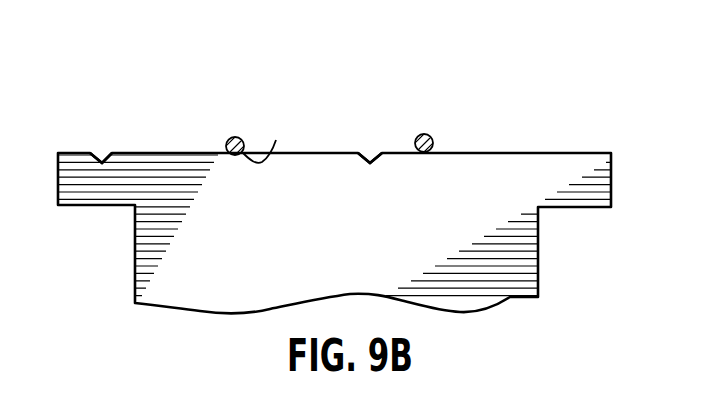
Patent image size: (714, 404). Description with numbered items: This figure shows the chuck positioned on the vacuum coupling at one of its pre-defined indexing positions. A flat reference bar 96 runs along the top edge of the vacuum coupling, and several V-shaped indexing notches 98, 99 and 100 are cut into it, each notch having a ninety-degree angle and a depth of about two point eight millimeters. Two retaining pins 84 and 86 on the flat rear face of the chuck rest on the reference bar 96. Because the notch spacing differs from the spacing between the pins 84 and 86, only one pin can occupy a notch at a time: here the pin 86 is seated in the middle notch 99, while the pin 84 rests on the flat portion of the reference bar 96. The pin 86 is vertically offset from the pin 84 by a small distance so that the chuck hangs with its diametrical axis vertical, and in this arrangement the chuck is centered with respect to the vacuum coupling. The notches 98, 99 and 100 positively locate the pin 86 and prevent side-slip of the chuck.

The retaining pin 84 is at (437, 133).
The retaining pin 86 is at (236, 137).
The reference bar 96 is at (590, 153).
The indexing notch 98 is at (102, 150).
The indexing notch 99 is at (276, 140).
The indexing notch 100 is at (372, 150).